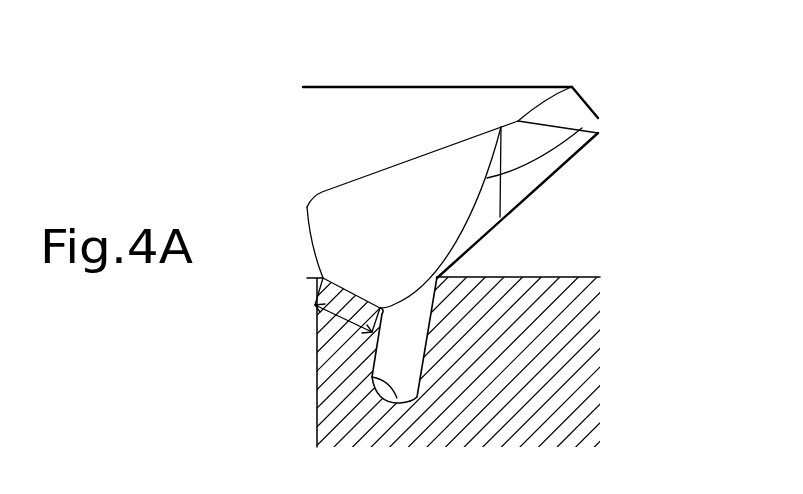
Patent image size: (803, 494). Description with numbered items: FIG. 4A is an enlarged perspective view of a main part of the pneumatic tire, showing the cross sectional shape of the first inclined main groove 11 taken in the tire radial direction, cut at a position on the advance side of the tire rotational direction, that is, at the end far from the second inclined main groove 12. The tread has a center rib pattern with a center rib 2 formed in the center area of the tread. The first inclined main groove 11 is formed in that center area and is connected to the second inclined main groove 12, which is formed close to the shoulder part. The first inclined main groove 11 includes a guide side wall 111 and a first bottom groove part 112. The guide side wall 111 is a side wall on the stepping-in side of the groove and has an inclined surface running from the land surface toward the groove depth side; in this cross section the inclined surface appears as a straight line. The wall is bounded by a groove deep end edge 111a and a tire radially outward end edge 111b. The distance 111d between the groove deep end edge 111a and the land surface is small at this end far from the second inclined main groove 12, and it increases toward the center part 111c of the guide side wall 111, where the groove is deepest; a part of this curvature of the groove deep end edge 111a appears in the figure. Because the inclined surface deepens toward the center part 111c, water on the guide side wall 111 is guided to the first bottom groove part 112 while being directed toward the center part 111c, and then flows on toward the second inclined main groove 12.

The center rib 2 is at (412, 105).
The first inclined main groove 11 is at (484, 143).
The second inclined main groove 12 is at (598, 118).
The guide side wall 111 is at (360, 207).
The groove deep end edge 111a is at (560, 138).
The tire radially outward end edge 111b is at (305, 207).
The center part 111c is at (403, 236).
The distance 111d is at (318, 337).
The first bottom groove part 112 is at (372, 378).